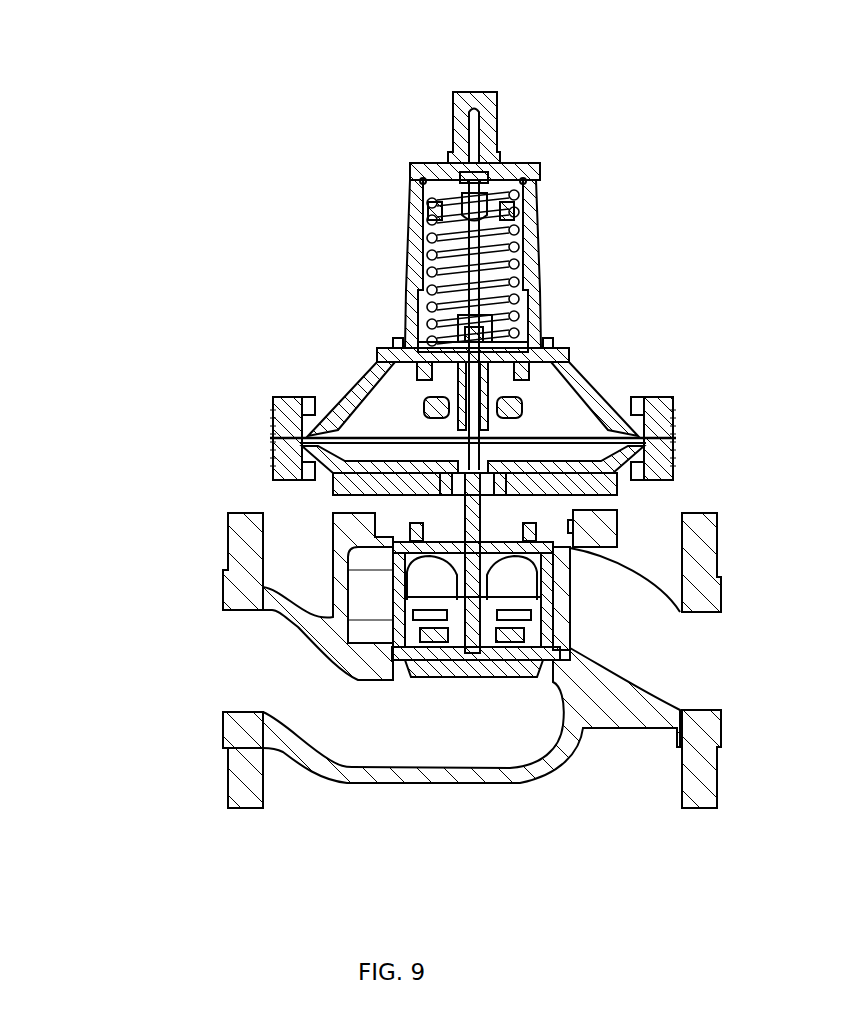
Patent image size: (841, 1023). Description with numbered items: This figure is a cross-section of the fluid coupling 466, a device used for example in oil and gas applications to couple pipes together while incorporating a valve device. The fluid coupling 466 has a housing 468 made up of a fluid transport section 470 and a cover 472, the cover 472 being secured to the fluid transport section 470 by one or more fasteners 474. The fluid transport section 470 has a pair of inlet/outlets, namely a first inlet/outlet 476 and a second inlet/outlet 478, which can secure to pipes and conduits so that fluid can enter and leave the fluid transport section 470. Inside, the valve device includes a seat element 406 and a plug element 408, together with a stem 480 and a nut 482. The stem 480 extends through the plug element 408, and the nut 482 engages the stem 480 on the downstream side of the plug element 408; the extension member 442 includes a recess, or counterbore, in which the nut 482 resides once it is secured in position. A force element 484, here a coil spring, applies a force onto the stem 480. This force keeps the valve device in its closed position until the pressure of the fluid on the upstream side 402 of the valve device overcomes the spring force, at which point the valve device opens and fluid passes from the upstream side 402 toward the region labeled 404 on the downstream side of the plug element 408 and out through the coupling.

The fluid coupling 466 is at (662, 85).
The force element 484 is at (520, 245).
The cover 472 is at (323, 355).
The fasteners 474 is at (652, 392).
The housing 468 is at (95, 155).
The stem 480 is at (490, 490).
The first inlet/outlet 476 is at (205, 644).
The second inlet/outlet 478 is at (740, 690).
The fluid transport section 470 is at (472, 820).
The extension member 442 is at (517, 628).
The plug element 408 is at (520, 605).
The nut 482 is at (432, 662).
The seat element 406 is at (535, 655).
The upstream side 402 is at (490, 738).
The outlet passage 404 is at (672, 671).